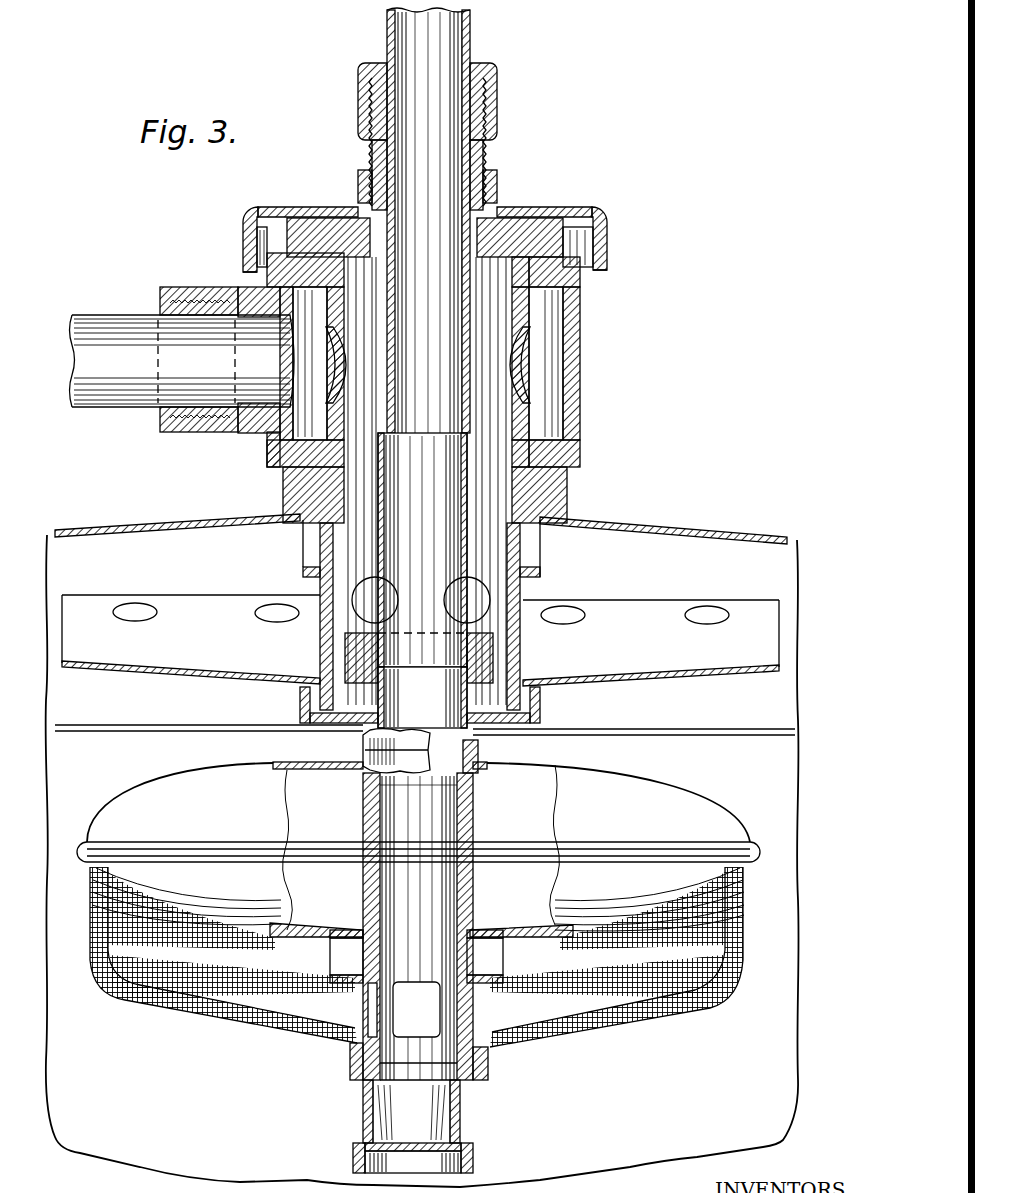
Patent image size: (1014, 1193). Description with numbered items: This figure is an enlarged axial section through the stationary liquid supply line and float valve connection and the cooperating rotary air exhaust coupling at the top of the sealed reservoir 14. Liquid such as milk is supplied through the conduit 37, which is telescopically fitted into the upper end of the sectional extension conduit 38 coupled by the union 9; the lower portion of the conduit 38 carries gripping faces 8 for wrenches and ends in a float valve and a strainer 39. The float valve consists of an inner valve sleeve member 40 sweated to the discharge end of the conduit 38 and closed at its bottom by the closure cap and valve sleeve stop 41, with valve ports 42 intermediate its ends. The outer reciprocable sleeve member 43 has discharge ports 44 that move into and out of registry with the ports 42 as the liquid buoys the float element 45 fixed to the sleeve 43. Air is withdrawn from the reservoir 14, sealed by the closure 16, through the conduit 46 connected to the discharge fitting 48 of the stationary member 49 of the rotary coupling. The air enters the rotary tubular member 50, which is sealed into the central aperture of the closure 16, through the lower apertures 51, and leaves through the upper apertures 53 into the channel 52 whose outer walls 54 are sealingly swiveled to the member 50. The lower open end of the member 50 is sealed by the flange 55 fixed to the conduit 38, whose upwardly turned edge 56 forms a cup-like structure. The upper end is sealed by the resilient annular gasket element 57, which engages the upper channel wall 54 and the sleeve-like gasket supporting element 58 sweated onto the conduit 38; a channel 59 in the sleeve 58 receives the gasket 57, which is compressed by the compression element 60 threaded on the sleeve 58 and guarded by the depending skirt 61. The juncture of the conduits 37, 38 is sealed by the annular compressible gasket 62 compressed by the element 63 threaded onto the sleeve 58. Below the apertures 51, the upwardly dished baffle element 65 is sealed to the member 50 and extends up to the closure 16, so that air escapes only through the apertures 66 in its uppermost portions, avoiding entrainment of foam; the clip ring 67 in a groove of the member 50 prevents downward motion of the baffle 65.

The gripping faces 8 is at (362, 749).
The union 9 is at (342, 652).
The reservoir 14 is at (62, 785).
The closure 16 is at (140, 520).
The conduit 37 is at (458, 31).
The sectional extension conduit 38 is at (468, 526).
The strainer 39 is at (220, 1022).
The inner valve sleeve member 40 is at (459, 833).
The closure cap and valve sleeve stop 41 is at (352, 1156).
The valve ports 42 is at (368, 1000).
The outer reciprocable sleeve member 43 is at (474, 882).
The discharge ports 44 is at (330, 959).
The float element 45 is at (682, 802).
The conduit 46 is at (96, 320).
The discharge fitting 48 is at (250, 418).
The stationary member 49 is at (572, 403).
The rotary tubular member 50 is at (550, 498).
The apertures 51 is at (355, 584).
The channel 52 is at (267, 283).
The apertures 53 is at (330, 368).
The outer walls 54 is at (556, 276).
The flange 55 is at (507, 724).
The upwardly turned edge 56 is at (541, 706).
The resilient annular gasket element 57 is at (318, 225).
The sleeve-like gasket supporting element 58 is at (472, 235).
The channel 59 is at (464, 294).
The compression element 60 is at (500, 204).
The depending skirt 61 is at (608, 252).
The annular compressible gasket 62 is at (498, 89).
The gasket confining and compressing element 63 is at (500, 119).
The upwardly dished baffle element 65 is at (234, 598).
The apertures 66 is at (137, 606).
The clip ring 67 is at (299, 701).